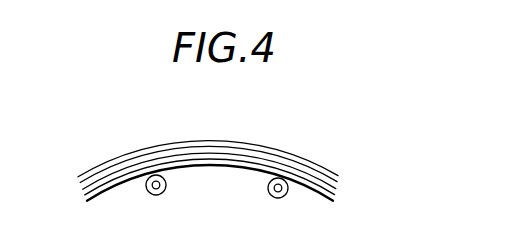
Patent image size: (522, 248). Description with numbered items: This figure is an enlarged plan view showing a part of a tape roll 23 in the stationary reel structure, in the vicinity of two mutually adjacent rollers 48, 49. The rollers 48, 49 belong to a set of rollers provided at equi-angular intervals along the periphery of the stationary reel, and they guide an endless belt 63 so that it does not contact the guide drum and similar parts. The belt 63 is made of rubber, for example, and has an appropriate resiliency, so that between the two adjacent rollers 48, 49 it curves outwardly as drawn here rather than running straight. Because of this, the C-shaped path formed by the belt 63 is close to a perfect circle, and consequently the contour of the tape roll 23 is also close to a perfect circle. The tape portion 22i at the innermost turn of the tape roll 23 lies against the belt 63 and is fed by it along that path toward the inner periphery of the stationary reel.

The tape roll 23 is at (290, 150).
The tape portion 22i is at (339, 177).
The endless belt 63 is at (312, 191).
The roller 48 is at (163, 192).
The roller 49 is at (270, 195).